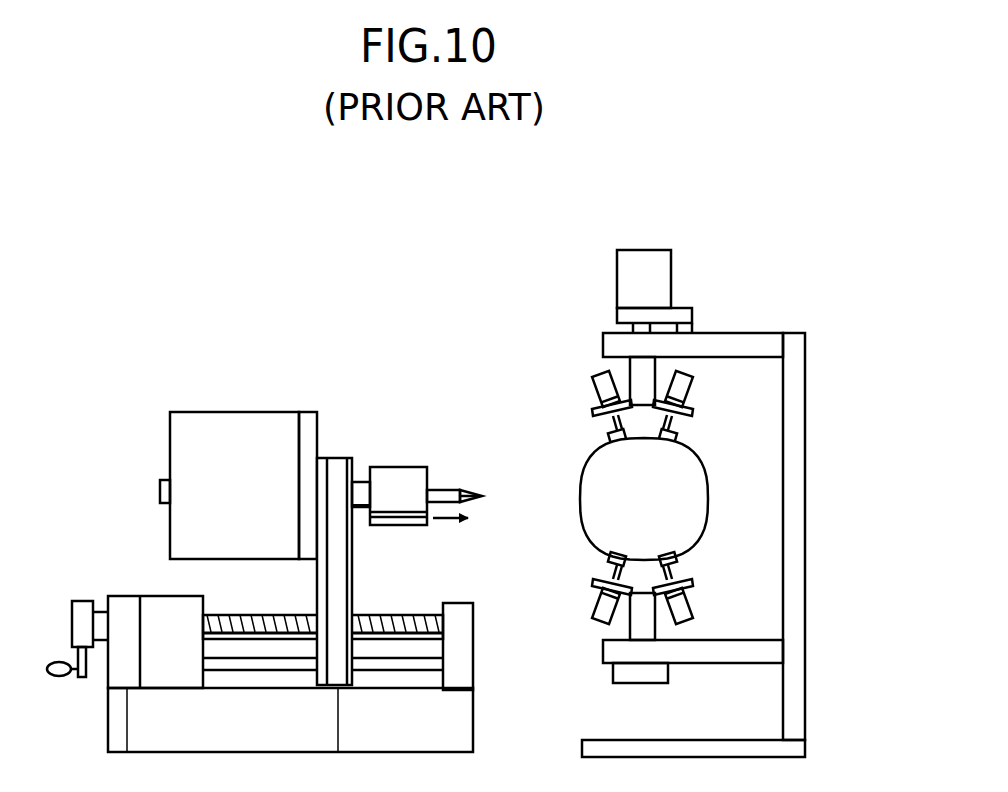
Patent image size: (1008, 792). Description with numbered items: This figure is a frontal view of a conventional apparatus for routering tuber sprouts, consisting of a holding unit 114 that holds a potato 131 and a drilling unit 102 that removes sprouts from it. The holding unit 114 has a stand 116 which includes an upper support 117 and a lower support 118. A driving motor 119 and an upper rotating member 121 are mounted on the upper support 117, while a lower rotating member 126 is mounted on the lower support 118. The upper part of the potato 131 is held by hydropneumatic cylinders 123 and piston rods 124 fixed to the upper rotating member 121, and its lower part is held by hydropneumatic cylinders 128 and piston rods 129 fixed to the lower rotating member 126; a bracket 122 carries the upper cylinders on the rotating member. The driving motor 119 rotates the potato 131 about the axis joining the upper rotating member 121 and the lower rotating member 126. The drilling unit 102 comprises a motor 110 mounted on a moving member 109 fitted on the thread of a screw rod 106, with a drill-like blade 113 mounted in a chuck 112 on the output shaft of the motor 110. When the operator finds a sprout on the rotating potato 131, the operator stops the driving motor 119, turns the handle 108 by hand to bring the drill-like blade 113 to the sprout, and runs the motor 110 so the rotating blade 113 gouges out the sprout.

The drilling unit 102 is at (310, 345).
The screw rod 106 is at (323, 615).
The handle 108 is at (77, 612).
The moving member 109 is at (339, 532).
The motor 110 is at (238, 460).
The chuck 112 is at (389, 460).
The drill-like blade 113 is at (473, 445).
The holding unit 114 is at (889, 477).
The stand 116 is at (827, 536).
The upper support 117 is at (693, 312).
The lower support 118 is at (693, 684).
The driving motor 119 is at (614, 287).
The upper rotating member 121 is at (596, 371).
The upper clamp bracket 122 is at (678, 419).
The hydropneumatic cylinders 123 is at (642, 389).
The piston rods 124 is at (636, 445).
The lower rotating member 126 is at (595, 630).
The hydropneumatic cylinders 128 is at (638, 604).
The piston rods 129 is at (637, 570).
The potato 131 is at (611, 499).